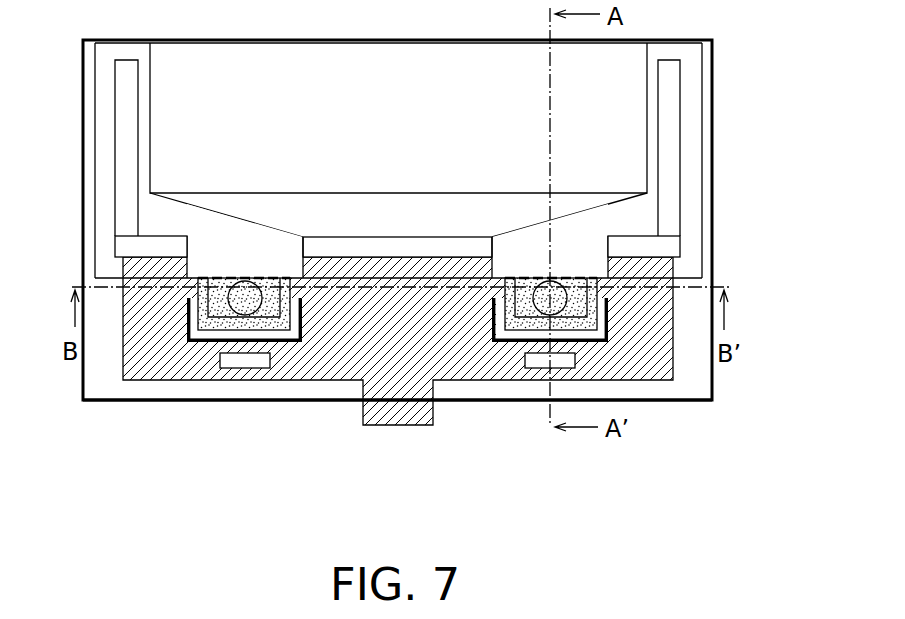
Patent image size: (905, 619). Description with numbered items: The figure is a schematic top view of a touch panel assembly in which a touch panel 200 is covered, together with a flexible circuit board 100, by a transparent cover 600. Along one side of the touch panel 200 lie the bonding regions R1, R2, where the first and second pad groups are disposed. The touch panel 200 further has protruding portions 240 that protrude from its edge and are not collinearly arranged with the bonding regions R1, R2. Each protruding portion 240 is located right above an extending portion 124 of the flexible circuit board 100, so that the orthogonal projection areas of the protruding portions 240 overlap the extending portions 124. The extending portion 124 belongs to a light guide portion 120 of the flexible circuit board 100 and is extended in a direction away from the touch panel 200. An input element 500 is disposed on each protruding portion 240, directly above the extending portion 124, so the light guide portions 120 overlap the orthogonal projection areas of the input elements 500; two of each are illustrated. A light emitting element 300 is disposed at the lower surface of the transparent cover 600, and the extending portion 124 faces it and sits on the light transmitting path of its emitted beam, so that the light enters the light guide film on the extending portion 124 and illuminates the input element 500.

The flexible circuit board 100 is at (673, 370).
The touch panel 200 is at (713, 130).
The bonding region R1 is at (104, 247).
The bonding region R2 is at (691, 249).
The protruding portion 240 is at (586, 310).
The light guide portion 120 is at (516, 313).
The extending portion 124 is at (397, 398).
The input element 500 is at (549, 315).
The light emitting element 300 is at (218, 364).
The transparent cover 600 is at (287, 402).